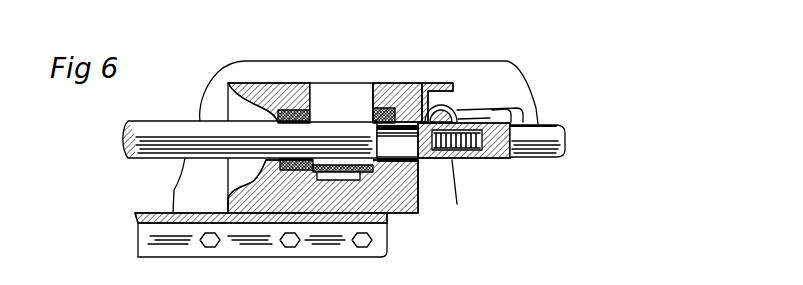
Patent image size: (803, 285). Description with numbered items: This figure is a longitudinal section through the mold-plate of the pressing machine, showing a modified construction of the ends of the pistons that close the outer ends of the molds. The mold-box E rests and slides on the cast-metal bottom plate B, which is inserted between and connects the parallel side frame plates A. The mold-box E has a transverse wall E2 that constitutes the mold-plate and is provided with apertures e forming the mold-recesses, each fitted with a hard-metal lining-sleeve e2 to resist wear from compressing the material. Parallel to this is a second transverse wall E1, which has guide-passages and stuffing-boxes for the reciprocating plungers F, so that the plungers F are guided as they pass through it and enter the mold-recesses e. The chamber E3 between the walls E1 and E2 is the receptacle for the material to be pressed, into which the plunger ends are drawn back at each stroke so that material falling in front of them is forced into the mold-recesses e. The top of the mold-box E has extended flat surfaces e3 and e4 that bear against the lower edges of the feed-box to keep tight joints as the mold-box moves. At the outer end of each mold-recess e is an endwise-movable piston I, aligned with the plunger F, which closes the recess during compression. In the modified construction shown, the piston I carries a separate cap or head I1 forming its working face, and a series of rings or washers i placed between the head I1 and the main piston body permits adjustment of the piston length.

The frame plates A is at (362, 66).
The bottom plate B is at (347, 226).
The mold-box E is at (540, 162).
The transverse wall E1 is at (293, 92).
The transverse wall E2 is at (413, 85).
The chamber E3 is at (341, 102).
The mold-recesses e is at (419, 182).
The lining-sleeves e2 is at (385, 110).
The flat top surface e3 is at (251, 84).
The flat top surface e4 is at (440, 85).
The plungers F is at (165, 113).
The pistons I is at (552, 102).
The cap or head I1 is at (453, 192).
The rings or washers i is at (472, 158).